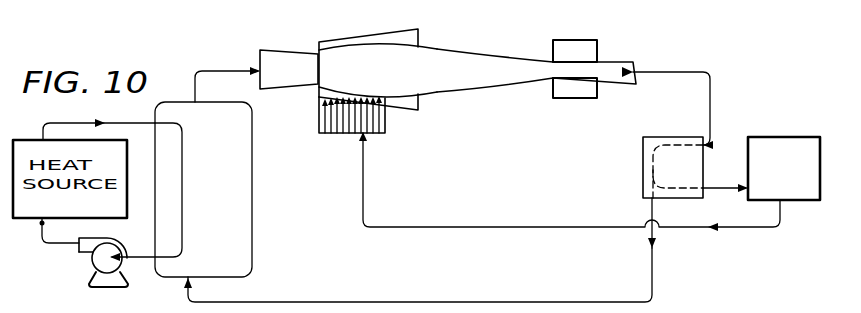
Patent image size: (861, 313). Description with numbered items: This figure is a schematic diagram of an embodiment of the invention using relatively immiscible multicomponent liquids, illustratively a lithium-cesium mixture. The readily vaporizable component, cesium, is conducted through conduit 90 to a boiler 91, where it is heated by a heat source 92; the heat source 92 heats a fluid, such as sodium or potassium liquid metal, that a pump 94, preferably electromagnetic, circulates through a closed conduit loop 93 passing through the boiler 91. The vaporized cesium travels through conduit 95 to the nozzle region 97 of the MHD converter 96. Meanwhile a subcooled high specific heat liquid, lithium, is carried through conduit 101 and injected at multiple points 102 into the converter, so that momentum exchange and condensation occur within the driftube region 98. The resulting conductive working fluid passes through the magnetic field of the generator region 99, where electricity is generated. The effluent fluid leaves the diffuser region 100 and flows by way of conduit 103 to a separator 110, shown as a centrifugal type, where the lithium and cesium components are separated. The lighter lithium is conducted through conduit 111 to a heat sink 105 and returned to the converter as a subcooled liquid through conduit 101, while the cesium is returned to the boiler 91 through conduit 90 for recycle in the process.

The conduit 90 is at (266, 302).
The boiler 91 is at (253, 255).
The heat source 92 is at (40, 223).
The closed conduit loop 93 is at (87, 120).
The pump 94 is at (95, 260).
The conduit 95 is at (245, 68).
The MHD converter 96 is at (325, 40).
The nozzle region 97 is at (290, 63).
The driftube region 98 is at (420, 55).
The generator region 99 is at (573, 70).
The diffuser region 100 is at (620, 60).
The conduit 101 is at (472, 227).
The multiple injection points 102 is at (359, 137).
The conduit 103 is at (712, 107).
The heat sink 105 is at (770, 137).
The separator 110 is at (655, 115).
The conduit 111 is at (724, 188).